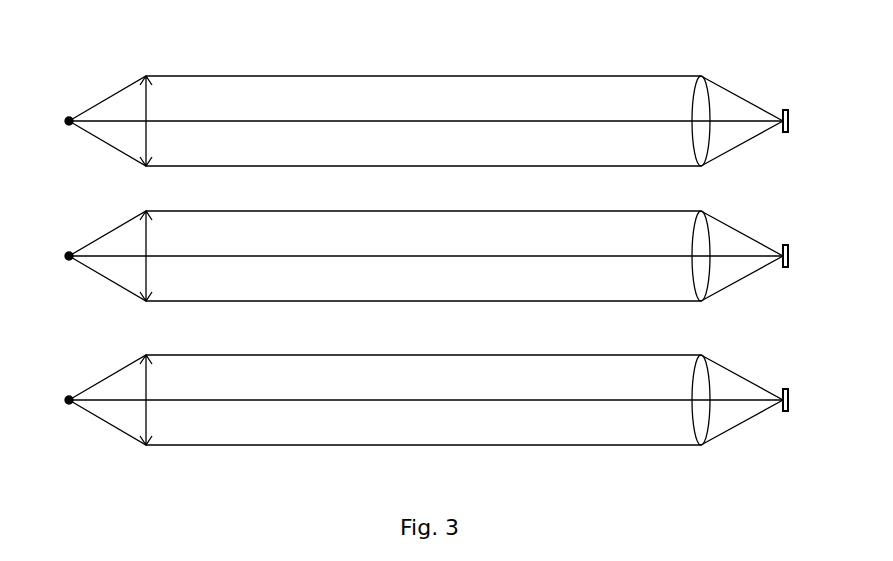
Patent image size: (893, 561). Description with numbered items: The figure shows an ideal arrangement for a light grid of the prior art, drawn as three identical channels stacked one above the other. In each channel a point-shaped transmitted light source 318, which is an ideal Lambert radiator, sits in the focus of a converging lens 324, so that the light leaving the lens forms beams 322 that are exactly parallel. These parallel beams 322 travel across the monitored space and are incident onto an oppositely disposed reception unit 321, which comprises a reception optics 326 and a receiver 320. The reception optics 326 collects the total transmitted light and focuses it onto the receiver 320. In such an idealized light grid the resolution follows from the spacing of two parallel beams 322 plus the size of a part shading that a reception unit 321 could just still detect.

The point-shaped transmitted light source 318 is at (66, 118).
The receiver 320 is at (783, 110).
The reception unit 321 is at (735, 78).
The beams 322 is at (435, 97).
The converging lens 324 is at (146, 107).
The reception optics 326 is at (703, 103).